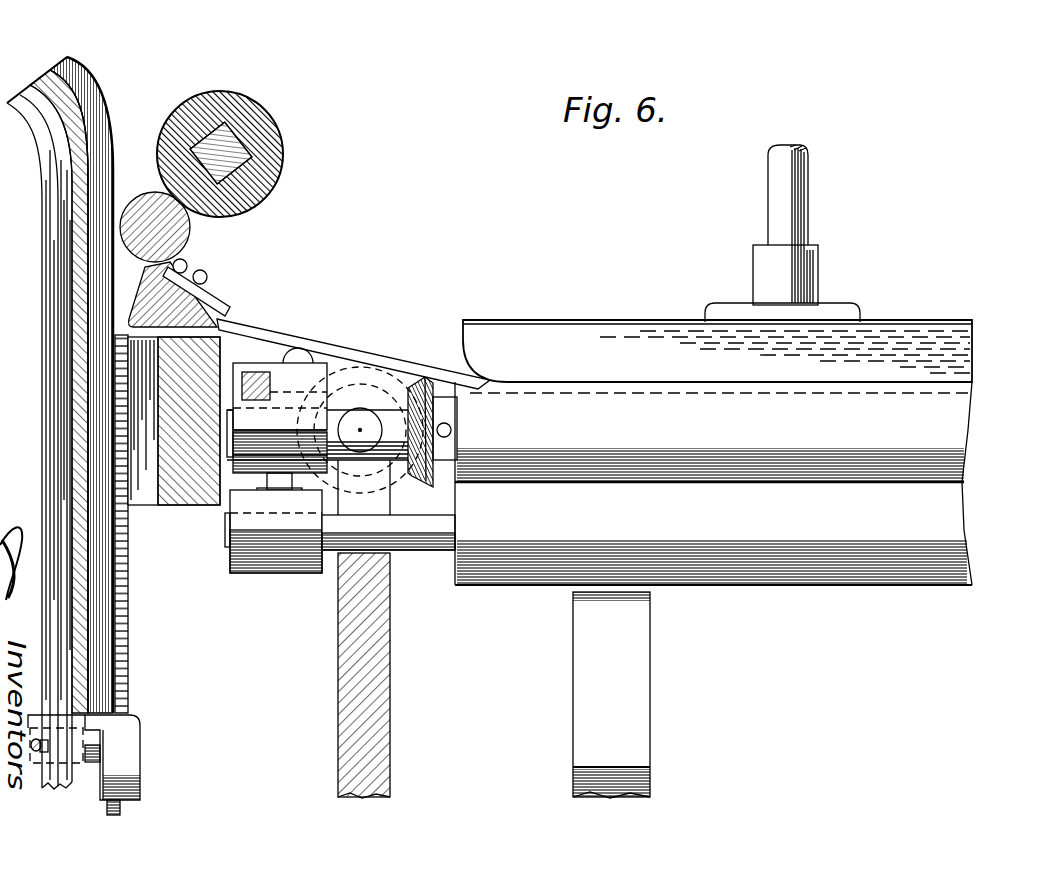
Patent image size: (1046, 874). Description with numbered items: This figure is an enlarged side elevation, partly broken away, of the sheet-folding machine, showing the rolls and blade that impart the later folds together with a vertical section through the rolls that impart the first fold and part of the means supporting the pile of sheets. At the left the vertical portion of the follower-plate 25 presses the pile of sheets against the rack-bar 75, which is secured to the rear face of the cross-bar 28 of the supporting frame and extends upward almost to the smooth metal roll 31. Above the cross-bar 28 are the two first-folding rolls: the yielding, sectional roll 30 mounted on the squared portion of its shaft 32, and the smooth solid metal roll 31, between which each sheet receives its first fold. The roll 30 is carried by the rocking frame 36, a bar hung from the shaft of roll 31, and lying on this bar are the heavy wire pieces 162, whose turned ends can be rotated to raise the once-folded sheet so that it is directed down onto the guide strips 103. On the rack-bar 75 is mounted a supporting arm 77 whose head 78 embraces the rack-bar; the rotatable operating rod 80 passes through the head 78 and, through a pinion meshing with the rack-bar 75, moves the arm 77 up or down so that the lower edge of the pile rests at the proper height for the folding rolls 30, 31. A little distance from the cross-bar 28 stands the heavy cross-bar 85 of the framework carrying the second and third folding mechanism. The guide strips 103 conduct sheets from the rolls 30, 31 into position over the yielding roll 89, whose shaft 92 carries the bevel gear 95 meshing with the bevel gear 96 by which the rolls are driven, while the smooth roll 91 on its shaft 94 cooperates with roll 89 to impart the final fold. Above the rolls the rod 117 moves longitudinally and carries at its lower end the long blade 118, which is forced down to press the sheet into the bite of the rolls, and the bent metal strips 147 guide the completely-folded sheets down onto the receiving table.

The follower-plate 25 is at (48, 296).
The cross-bar 28 is at (200, 490).
The first folding roll 30 is at (283, 140).
The smooth folding roll 31 is at (181, 240).
The shaft of roll 30 32 is at (236, 130).
The rocking frame 36 is at (226, 318).
The heavy wire pieces 162 is at (209, 293).
The rack-bar 75 is at (127, 639).
The supporting arm 77 is at (36, 716).
The head 78 is at (132, 747).
The operating rod 80 is at (97, 764).
The heavy cross-bar 85 is at (383, 715).
The folding roll 89 is at (960, 428).
The folding roll 91 is at (948, 517).
The shaft of roll 89 92 is at (393, 417).
The shaft of roll 91 94 is at (442, 545).
The bevel gear 95 is at (420, 444).
The bevel gear 96 is at (369, 375).
The guide strips 103 is at (332, 347).
The rod 117 is at (800, 217).
The blade 118 is at (962, 353).
The bent metal strips 147 is at (642, 703).